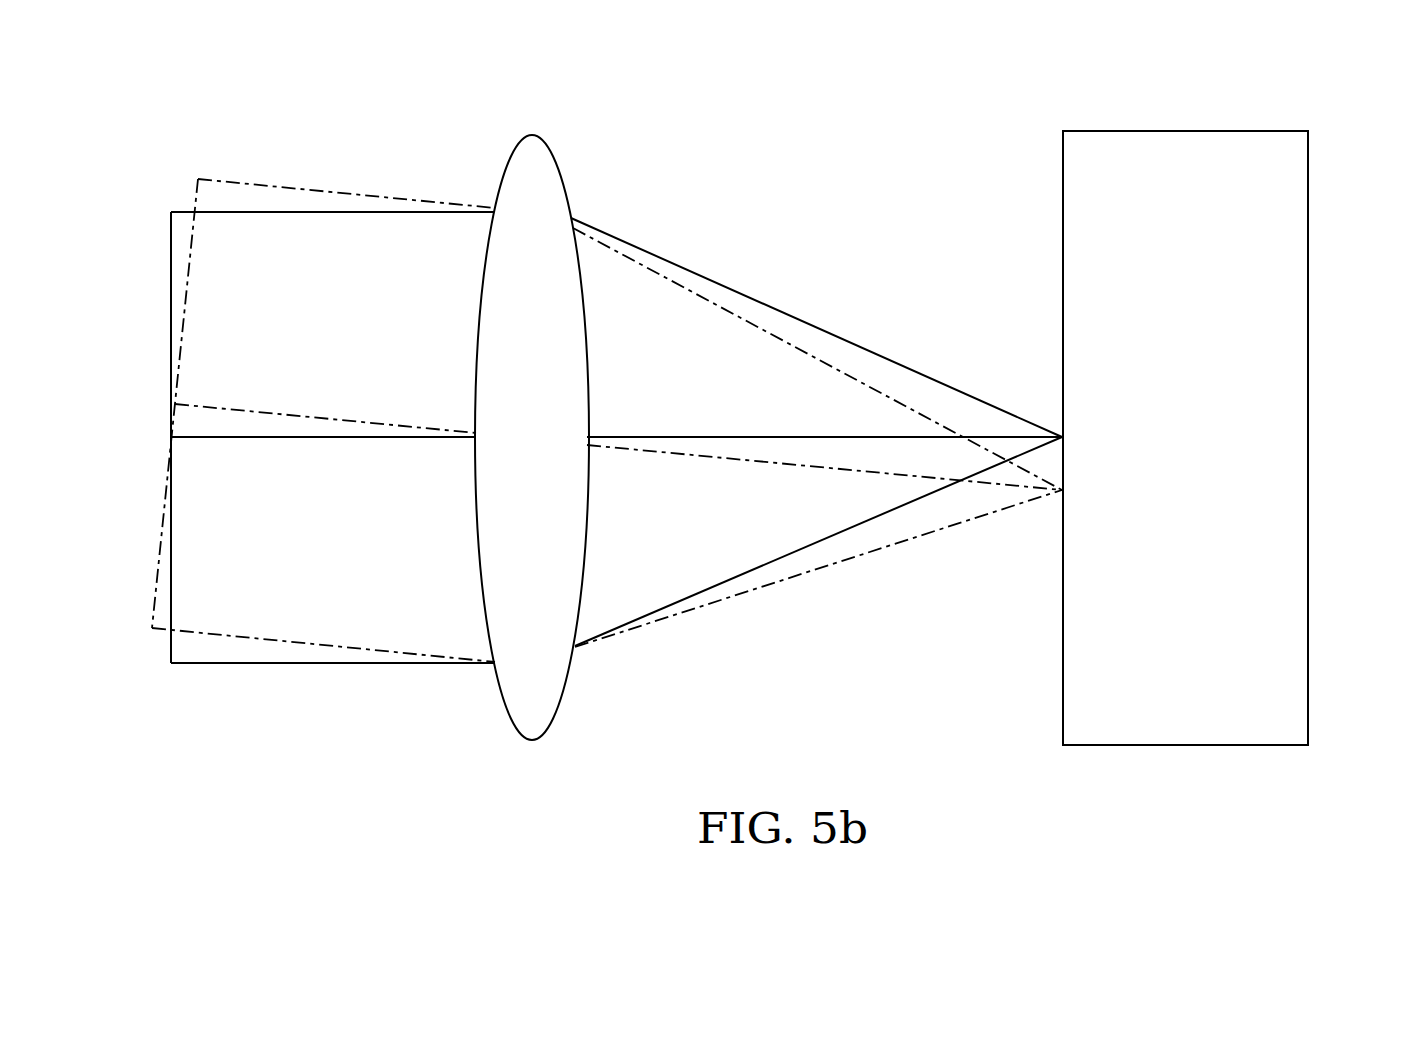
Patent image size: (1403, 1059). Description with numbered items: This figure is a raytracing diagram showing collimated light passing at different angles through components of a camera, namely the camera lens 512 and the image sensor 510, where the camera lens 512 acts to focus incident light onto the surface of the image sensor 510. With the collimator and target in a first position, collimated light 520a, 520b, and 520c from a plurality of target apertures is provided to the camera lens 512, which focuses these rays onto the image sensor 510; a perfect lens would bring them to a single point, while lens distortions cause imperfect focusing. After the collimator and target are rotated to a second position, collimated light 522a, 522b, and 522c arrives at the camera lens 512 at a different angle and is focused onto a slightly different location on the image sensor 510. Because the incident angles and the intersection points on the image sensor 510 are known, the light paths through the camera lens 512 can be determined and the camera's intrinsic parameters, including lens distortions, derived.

The image sensor 510 is at (1266, 131).
The camera lens 512 is at (548, 152).
The collimated light 520a is at (347, 213).
The collimated light 520b is at (357, 437).
The collimated light 520c is at (303, 663).
The collimated light 522a is at (285, 187).
The collimated light 522b is at (393, 424).
The collimated light 522c is at (368, 648).